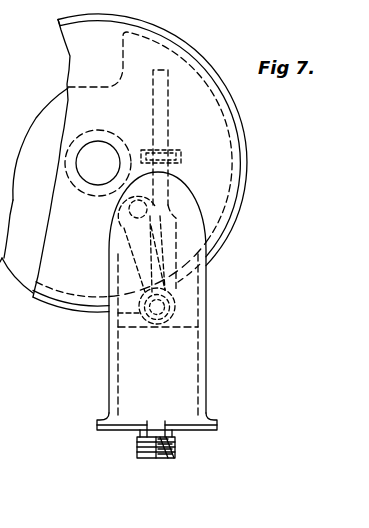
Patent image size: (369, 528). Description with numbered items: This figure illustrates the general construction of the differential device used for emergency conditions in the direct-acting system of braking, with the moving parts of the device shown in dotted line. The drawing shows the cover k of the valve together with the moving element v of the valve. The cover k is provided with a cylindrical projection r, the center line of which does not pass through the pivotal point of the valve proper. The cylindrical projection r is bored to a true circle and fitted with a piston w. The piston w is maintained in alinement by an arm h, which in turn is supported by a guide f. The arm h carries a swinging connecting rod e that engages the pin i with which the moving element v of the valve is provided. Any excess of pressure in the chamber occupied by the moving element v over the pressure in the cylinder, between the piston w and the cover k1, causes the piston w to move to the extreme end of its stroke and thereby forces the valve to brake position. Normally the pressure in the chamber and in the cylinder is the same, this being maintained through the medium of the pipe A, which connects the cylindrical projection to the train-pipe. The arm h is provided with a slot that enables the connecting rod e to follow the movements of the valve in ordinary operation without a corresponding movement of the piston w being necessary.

The cover k is at (62, 42).
The moving element v is at (28, 124).
The arm h is at (170, 119).
The guide f is at (180, 157).
The pin i is at (131, 210).
The swinging connecting rod e is at (133, 238).
The piston w is at (170, 332).
The cylindrical projection r is at (207, 378).
The cover k1 is at (193, 430).
The pipe A is at (150, 460).